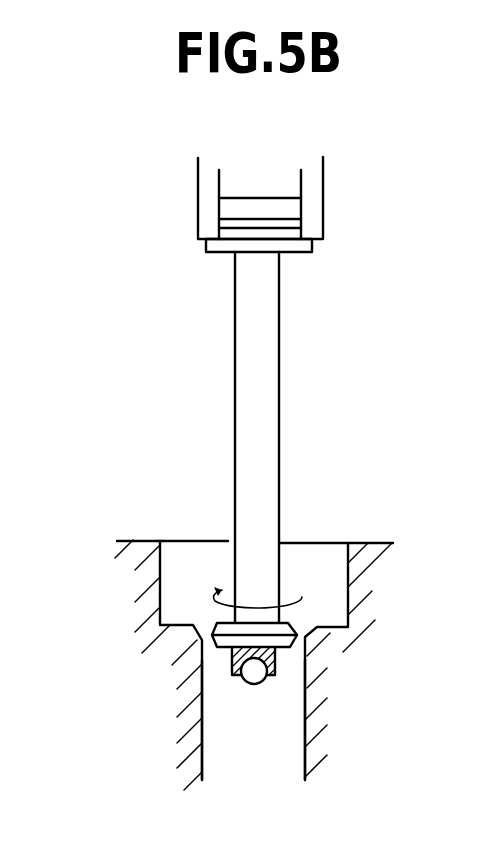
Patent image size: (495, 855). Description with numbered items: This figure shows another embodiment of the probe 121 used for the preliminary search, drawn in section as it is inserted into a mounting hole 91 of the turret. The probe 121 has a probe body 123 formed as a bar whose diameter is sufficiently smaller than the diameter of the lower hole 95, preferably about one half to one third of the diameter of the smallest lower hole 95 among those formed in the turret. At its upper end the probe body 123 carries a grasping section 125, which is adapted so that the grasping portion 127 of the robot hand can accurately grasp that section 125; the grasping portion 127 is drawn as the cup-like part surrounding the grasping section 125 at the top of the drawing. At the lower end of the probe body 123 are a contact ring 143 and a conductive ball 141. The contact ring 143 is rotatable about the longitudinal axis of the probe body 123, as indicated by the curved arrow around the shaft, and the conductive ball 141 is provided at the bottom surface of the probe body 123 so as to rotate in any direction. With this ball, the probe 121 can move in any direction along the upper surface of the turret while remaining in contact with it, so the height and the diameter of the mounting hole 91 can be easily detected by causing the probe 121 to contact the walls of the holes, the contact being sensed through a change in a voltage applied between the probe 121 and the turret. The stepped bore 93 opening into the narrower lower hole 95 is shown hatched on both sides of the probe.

The mounting hole 91 is at (387, 645).
The bore 93 is at (312, 567).
The lower hole 95 is at (285, 737).
The probe 121 is at (283, 444).
The probe body 123 is at (267, 388).
The grasping section 125 is at (235, 236).
The grasping portion 127 is at (207, 195).
The conductive ball 141 is at (253, 679).
The contact ring 143 is at (213, 655).